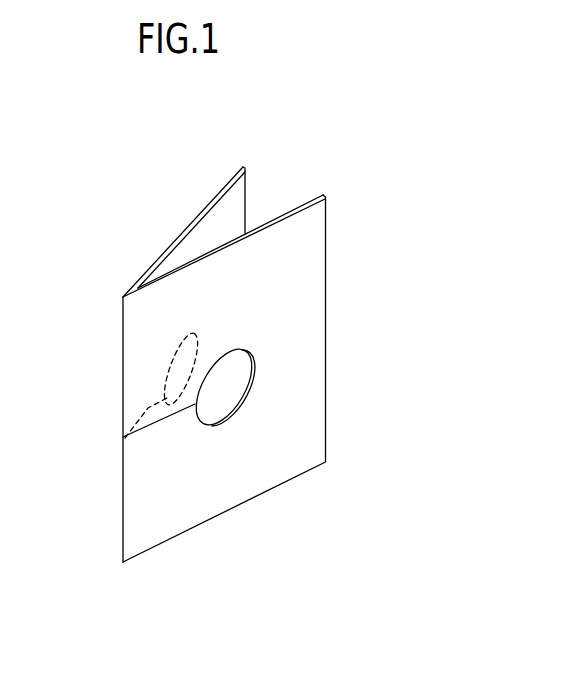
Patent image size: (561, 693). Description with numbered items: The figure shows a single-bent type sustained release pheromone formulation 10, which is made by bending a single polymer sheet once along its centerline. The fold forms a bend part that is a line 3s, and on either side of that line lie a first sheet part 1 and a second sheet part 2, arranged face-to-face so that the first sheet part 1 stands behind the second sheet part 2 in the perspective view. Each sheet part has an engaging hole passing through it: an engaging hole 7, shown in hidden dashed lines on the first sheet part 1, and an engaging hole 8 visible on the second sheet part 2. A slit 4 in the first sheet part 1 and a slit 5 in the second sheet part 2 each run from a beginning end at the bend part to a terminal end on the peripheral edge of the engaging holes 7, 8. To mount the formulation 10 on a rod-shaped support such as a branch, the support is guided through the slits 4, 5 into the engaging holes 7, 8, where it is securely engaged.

The sustained release pheromone formulation 10 is at (95, 263).
The first sheet part 1 is at (220, 210).
The second sheet part 2 is at (308, 238).
The line 3s is at (123, 483).
The slit 4 is at (145, 406).
The slit 5 is at (160, 420).
The engaging hole 7 is at (168, 360).
The engaging hole 8 is at (247, 388).